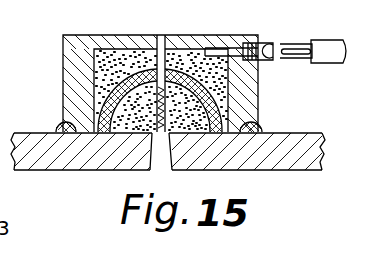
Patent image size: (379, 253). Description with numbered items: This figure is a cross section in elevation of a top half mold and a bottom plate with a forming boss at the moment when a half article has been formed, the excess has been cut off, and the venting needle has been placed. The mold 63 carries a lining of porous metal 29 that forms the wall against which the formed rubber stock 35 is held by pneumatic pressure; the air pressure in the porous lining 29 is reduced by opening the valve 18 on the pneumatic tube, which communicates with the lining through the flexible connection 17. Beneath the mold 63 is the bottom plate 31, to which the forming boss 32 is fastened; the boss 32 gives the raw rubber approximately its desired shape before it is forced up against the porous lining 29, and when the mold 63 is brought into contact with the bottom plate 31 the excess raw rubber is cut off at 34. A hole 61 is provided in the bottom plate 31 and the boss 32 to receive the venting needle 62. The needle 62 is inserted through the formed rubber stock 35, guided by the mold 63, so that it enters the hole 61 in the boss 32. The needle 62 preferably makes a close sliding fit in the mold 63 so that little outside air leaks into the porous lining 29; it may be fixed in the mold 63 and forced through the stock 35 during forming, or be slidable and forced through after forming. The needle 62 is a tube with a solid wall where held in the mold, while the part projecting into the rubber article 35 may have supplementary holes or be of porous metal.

The porous metal lining 29 is at (118, 61).
The venting needle 62 is at (161, 35).
The mold 63 is at (232, 36).
The valve 18 is at (280, 47).
The flexible connection 17 is at (327, 43).
The formed rubber stock 35 is at (206, 100).
The forming boss 32 is at (185, 112).
The cut-off point of excess raw rubber 34 is at (58, 130).
The bottom plate 31 is at (298, 142).
The hole 61 is at (160, 158).